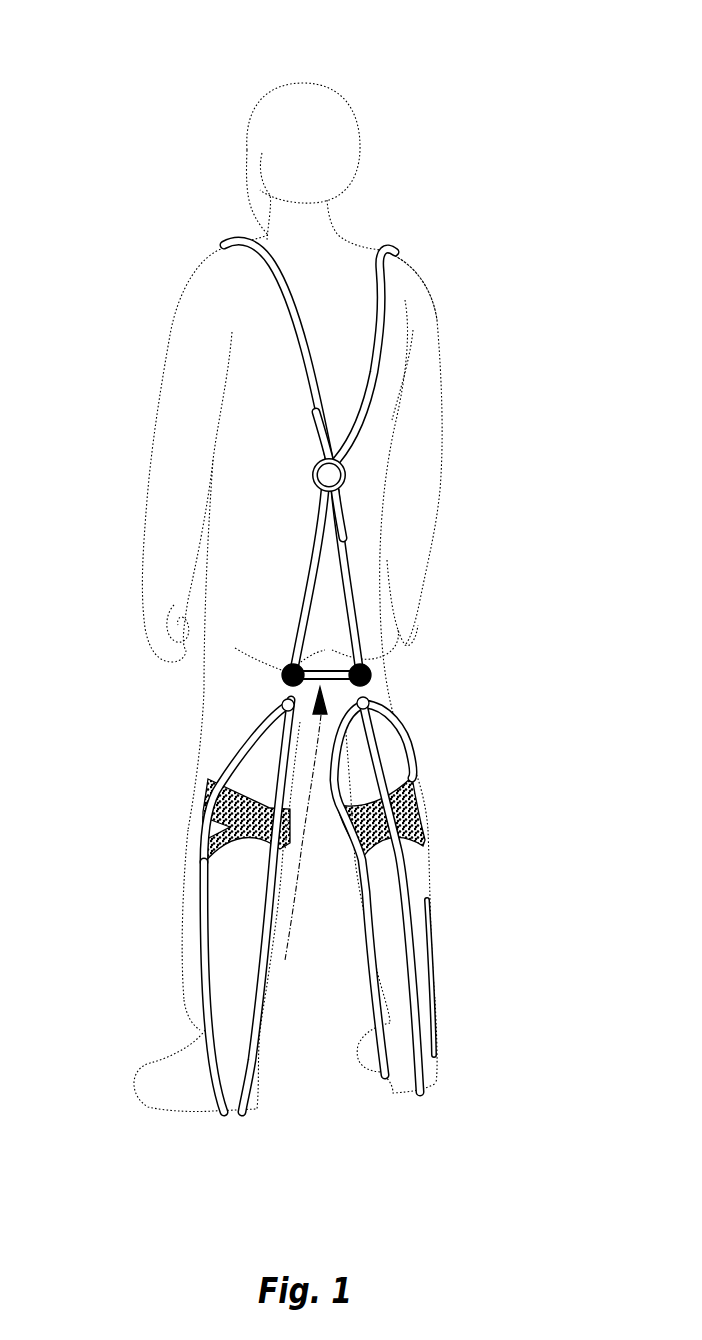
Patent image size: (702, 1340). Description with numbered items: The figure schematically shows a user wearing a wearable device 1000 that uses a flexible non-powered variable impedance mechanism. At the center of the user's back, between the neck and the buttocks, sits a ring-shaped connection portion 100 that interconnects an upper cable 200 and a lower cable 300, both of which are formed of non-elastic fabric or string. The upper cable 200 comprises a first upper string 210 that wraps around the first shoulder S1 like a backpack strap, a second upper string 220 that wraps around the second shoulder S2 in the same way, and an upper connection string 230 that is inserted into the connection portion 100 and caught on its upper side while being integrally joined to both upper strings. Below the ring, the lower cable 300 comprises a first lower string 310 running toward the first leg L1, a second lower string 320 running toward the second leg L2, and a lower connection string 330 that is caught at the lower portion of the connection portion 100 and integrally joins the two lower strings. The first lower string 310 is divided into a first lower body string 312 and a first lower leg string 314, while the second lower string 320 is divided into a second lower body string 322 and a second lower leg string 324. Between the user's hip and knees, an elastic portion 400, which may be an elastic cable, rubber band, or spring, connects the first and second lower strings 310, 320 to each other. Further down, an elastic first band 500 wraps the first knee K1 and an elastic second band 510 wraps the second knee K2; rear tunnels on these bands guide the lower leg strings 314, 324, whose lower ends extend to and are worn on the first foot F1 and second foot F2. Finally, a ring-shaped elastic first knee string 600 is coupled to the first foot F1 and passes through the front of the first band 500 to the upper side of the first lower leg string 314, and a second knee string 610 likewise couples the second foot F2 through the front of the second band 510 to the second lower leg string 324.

The wearable device 1000 is at (184, 29).
The connection portion 100 is at (348, 468).
The upper cable 200 is at (297, 338).
The first upper string 210 is at (303, 348).
The second upper string 220 is at (383, 290).
The upper connection string 230 is at (322, 463).
The lower cable 300 is at (310, 800).
The first lower string 310 is at (170, 801).
The (1-1)th lower string 312 is at (303, 598).
The (1-2)th lower string 314 is at (277, 773).
The second lower string 320 is at (469, 791).
The (2-1)th lower string 322 is at (350, 541).
The (2-2)th lower string 324 is at (374, 746).
The lower connection string 330 is at (430, 513).
The elastic portion 400 is at (320, 715).
The first band 500 is at (203, 863).
The second band 510 is at (427, 827).
The first knee string 600 is at (210, 997).
The second knee string 610 is at (433, 987).
The first shoulder S1 is at (225, 258).
The second shoulder S2 is at (390, 292).
The first knee K1 is at (228, 827).
The second knee K2 is at (424, 806).
The first leg L1 is at (233, 948).
The second leg L2 is at (417, 890).
The first foot F1 is at (203, 1095).
The second foot F2 is at (400, 1075).